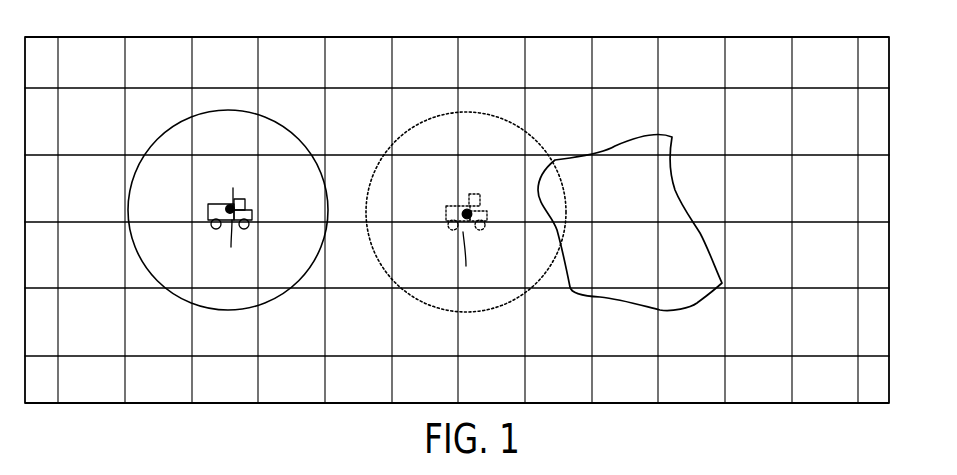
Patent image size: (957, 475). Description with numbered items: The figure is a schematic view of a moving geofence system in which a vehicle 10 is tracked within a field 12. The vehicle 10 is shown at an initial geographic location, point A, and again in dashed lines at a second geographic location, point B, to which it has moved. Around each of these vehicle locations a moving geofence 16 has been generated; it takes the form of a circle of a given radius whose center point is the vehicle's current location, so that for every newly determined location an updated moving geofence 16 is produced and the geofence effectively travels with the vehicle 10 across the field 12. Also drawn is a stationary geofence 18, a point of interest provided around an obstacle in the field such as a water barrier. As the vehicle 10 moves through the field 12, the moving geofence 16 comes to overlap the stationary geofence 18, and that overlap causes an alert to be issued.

The vehicle 10 is at (222, 204).
The field 12 is at (251, 37).
The moving geofence 16 is at (128, 218).
The stationary geofence 18 is at (708, 247).